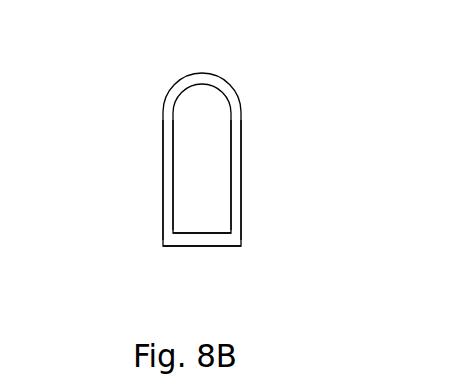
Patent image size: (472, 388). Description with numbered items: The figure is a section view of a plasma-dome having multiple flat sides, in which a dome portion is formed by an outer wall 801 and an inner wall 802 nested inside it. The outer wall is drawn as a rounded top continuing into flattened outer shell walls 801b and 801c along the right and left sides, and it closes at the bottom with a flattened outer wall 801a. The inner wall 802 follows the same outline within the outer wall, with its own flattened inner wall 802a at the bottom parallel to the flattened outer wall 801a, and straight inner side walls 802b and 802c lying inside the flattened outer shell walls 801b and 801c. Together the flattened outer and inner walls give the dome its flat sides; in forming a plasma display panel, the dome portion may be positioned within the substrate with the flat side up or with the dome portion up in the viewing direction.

The outer wall 801 is at (203, 73).
The inner wall 802 is at (190, 85).
The flattened outer wall 801a is at (185, 247).
The flattened outer shell wall 801b is at (241, 132).
The flattened outer shell wall 801c is at (163, 152).
The flattened inner wall 802a is at (212, 233).
The right wall of inner tube 802b is at (231, 205).
The left wall of inner tube 802c is at (173, 208).